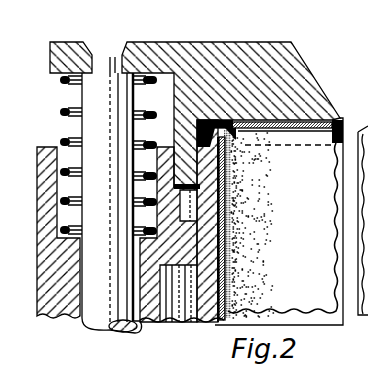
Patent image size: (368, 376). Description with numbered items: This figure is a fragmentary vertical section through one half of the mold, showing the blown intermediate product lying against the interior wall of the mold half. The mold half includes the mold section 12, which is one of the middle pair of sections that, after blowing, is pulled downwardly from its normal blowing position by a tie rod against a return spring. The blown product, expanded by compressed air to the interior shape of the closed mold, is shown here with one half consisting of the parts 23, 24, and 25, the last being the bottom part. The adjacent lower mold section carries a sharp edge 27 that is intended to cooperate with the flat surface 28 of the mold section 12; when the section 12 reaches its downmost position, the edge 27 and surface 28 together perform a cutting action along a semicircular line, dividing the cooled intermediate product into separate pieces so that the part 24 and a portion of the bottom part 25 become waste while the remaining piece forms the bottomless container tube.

The mold section 12 is at (227, 60).
The flat surface 28 is at (260, 123).
The sharp edge 27 is at (234, 140).
The bottom part 25 is at (271, 120).
The part of intermediate product 23 is at (231, 238).
The part of intermediate product 24 is at (157, 175).